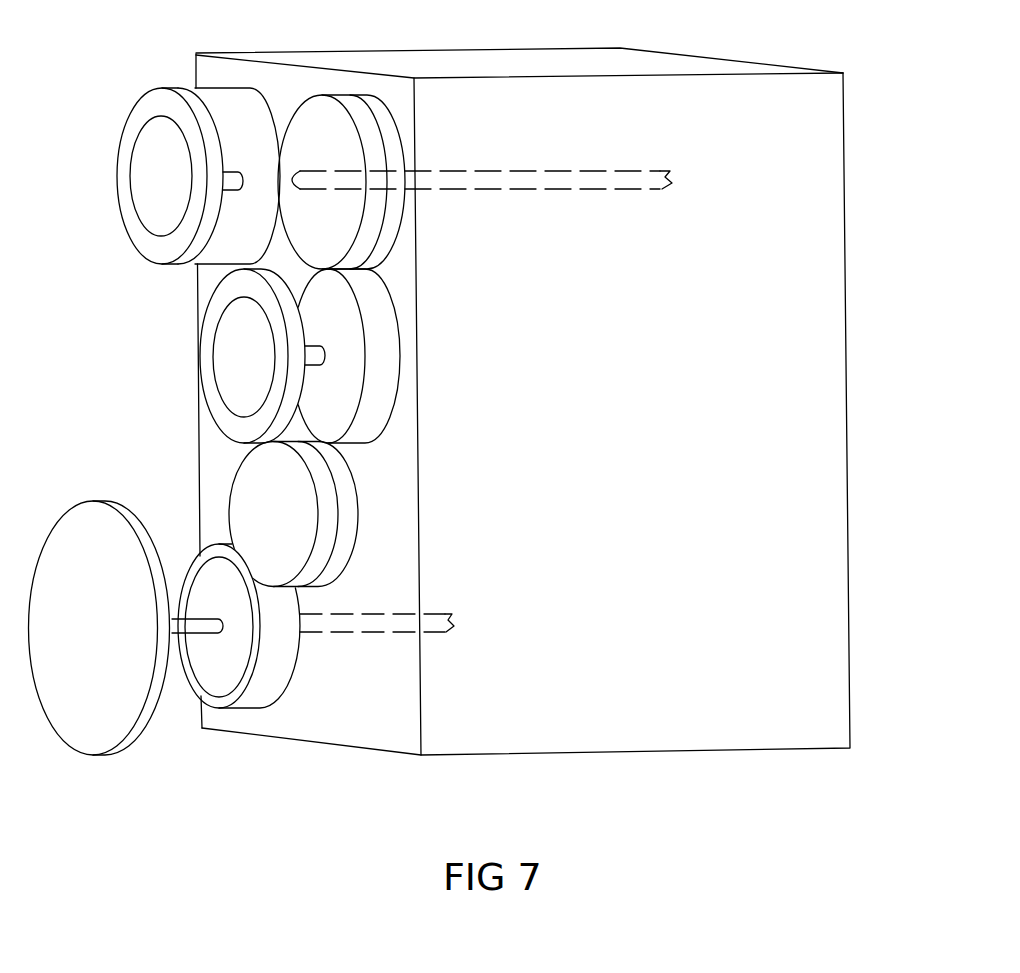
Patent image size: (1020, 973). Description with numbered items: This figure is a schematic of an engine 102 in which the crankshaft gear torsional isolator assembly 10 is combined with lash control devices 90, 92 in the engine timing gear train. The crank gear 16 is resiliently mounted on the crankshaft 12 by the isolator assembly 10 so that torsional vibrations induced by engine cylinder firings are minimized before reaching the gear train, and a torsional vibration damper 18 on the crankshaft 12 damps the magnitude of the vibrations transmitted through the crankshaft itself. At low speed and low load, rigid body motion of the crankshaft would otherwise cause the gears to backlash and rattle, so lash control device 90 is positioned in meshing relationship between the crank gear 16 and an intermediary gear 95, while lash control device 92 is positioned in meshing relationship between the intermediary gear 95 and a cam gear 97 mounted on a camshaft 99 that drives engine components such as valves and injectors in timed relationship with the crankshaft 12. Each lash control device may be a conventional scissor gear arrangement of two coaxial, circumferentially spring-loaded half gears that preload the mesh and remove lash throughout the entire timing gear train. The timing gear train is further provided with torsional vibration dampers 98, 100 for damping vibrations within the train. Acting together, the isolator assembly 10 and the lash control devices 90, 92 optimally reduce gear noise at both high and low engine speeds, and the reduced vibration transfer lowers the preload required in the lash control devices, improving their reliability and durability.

The crank gear torsional vibration isolator assembly 10 is at (228, 667).
The crankshaft 12 is at (368, 632).
The crank gear 16 is at (260, 698).
The torsional vibration damper 18 is at (127, 775).
The lash control device 90 is at (400, 250).
The lash control device 92 is at (376, 473).
The intermediary gear 95 is at (385, 352).
The cam gear 97 is at (227, 110).
The torsional vibration damper 98 is at (120, 184).
The camshaft 99 is at (568, 165).
The torsional vibration damper 100 is at (203, 348).
The engine 102 is at (865, 729).